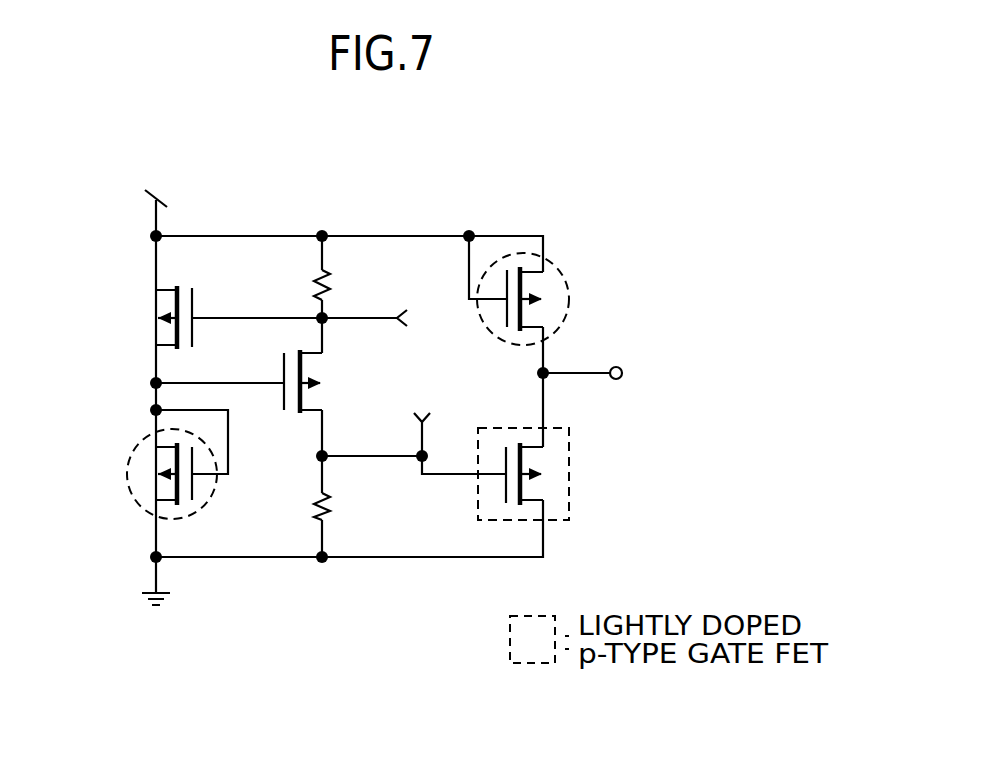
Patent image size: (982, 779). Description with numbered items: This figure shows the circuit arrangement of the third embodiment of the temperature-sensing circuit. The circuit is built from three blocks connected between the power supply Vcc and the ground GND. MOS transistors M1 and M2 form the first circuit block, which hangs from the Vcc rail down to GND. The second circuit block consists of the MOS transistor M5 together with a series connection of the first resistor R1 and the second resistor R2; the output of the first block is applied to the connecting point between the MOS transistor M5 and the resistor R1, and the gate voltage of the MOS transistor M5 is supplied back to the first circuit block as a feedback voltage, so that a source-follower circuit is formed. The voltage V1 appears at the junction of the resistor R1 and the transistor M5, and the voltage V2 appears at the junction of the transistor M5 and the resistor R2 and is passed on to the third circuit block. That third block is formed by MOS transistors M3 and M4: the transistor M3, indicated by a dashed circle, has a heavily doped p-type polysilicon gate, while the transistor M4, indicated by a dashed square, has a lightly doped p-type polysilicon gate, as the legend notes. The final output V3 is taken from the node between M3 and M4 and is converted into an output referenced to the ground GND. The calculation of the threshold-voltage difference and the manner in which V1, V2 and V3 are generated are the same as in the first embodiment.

The MOS transistor M1 is at (162, 303).
The MOS transistor M2 is at (152, 489).
The MOS transistor M3 is at (543, 278).
The MOS transistor M4 is at (545, 487).
The MOS transistor M5 is at (316, 399).
The first resistor R1 is at (340, 286).
The second resistor R2 is at (338, 508).
The power supply Vcc is at (153, 175).
The voltage V1 is at (381, 319).
The voltage V2 is at (414, 427).
The final output V3 is at (605, 375).
The ground GND is at (152, 596).